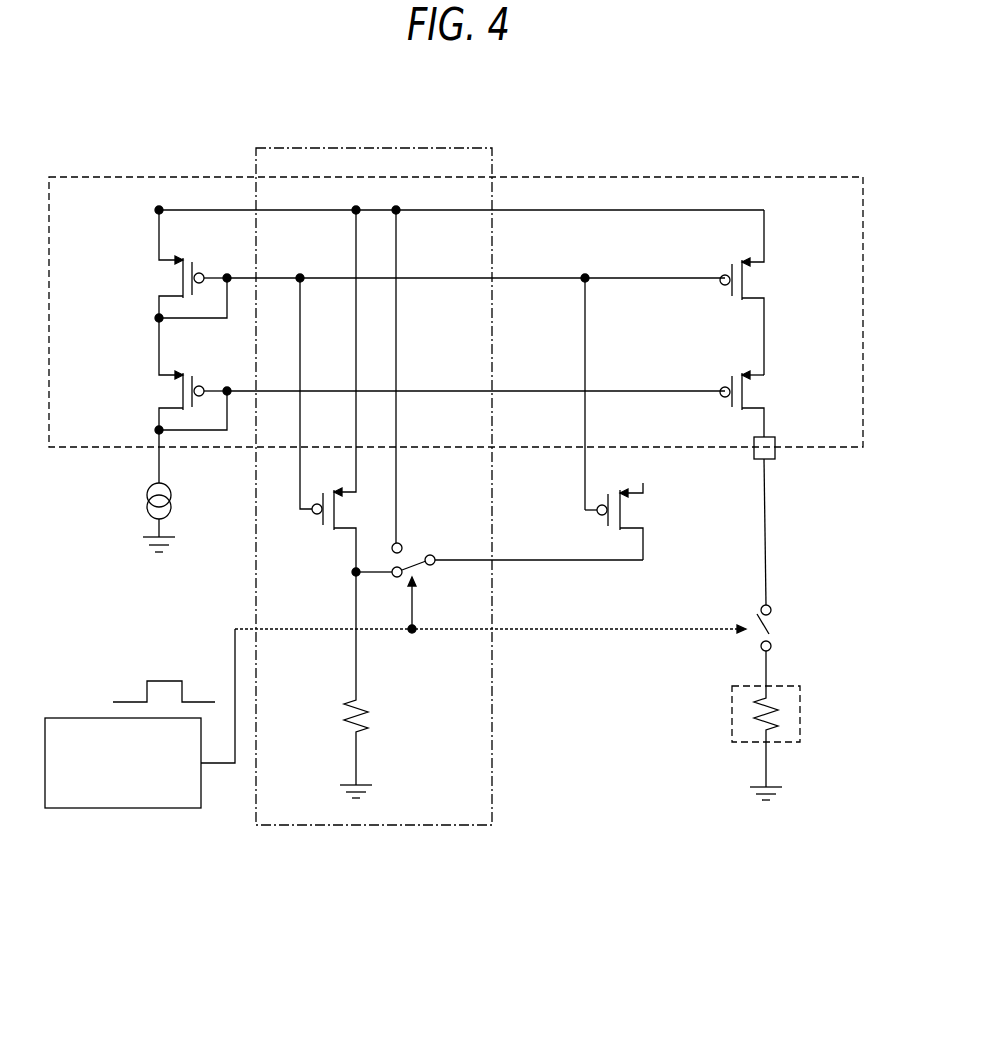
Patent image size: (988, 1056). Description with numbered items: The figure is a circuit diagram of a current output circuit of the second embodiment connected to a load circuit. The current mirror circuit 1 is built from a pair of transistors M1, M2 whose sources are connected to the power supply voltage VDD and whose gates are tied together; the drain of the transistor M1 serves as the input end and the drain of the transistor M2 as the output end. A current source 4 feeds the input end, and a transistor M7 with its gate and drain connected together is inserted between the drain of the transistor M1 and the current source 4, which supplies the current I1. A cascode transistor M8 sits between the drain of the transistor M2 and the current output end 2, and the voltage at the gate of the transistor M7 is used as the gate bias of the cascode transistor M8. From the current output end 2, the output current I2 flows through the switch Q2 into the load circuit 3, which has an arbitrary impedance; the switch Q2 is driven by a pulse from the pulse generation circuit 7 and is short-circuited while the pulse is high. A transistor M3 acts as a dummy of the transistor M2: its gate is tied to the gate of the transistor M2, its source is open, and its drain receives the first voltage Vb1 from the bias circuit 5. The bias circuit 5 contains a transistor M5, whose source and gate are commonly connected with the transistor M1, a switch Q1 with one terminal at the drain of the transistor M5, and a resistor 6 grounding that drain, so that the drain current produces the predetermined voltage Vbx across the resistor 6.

The current mirror circuit 1 is at (677, 180).
The current output end 2 is at (777, 457).
The load circuit 3 is at (800, 712).
The current source 4 is at (145, 494).
The bias circuit 5 is at (488, 687).
The resistor 6 is at (375, 713).
The pulse generation circuit 7 is at (128, 803).
The first transistor M1 is at (165, 277).
The second transistor M2 is at (763, 273).
The third transistor M3 is at (643, 505).
The transistor M5 is at (308, 520).
The transistor M7 is at (165, 390).
The cascode transistor M8 is at (763, 385).
The switch Q1 is at (410, 544).
The switch Q2 is at (773, 622).
The current I1 is at (186, 477).
The output current I2 is at (787, 528).
The power supply voltage VDD is at (155, 210).
The predetermined voltage Vbx is at (337, 558).
The first voltage Vb1 is at (505, 575).